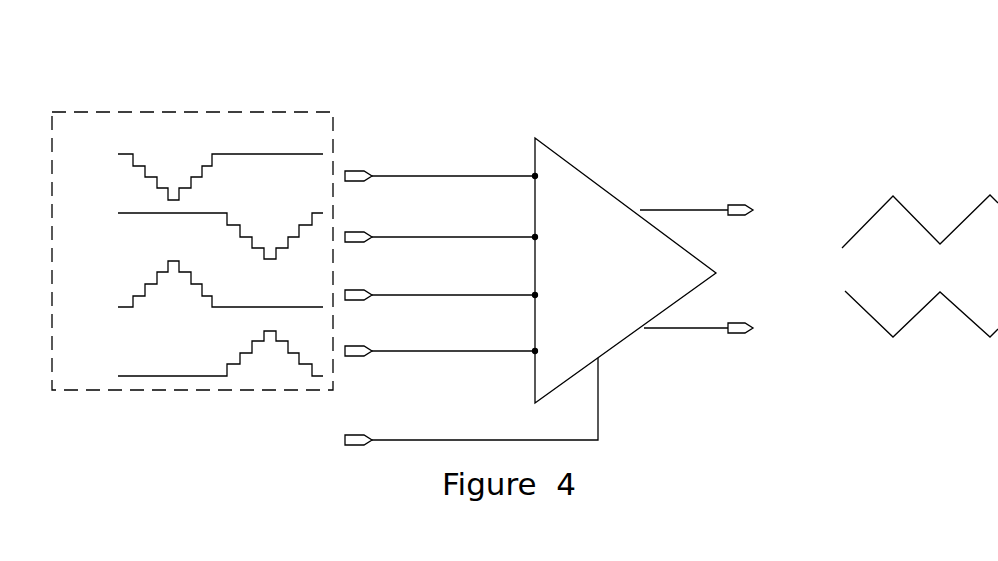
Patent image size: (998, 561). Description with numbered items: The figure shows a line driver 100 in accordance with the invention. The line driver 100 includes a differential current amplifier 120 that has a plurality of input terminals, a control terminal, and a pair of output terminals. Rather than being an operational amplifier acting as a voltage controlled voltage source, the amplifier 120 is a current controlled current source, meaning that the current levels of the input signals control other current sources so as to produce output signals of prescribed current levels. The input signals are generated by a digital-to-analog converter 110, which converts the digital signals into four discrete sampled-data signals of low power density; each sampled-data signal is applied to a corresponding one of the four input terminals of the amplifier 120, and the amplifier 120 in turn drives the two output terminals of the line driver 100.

The line driver 100 is at (682, 20).
The digital-to-analog converter 110 is at (235, 110).
The differential current amplifier 120 is at (575, 190).